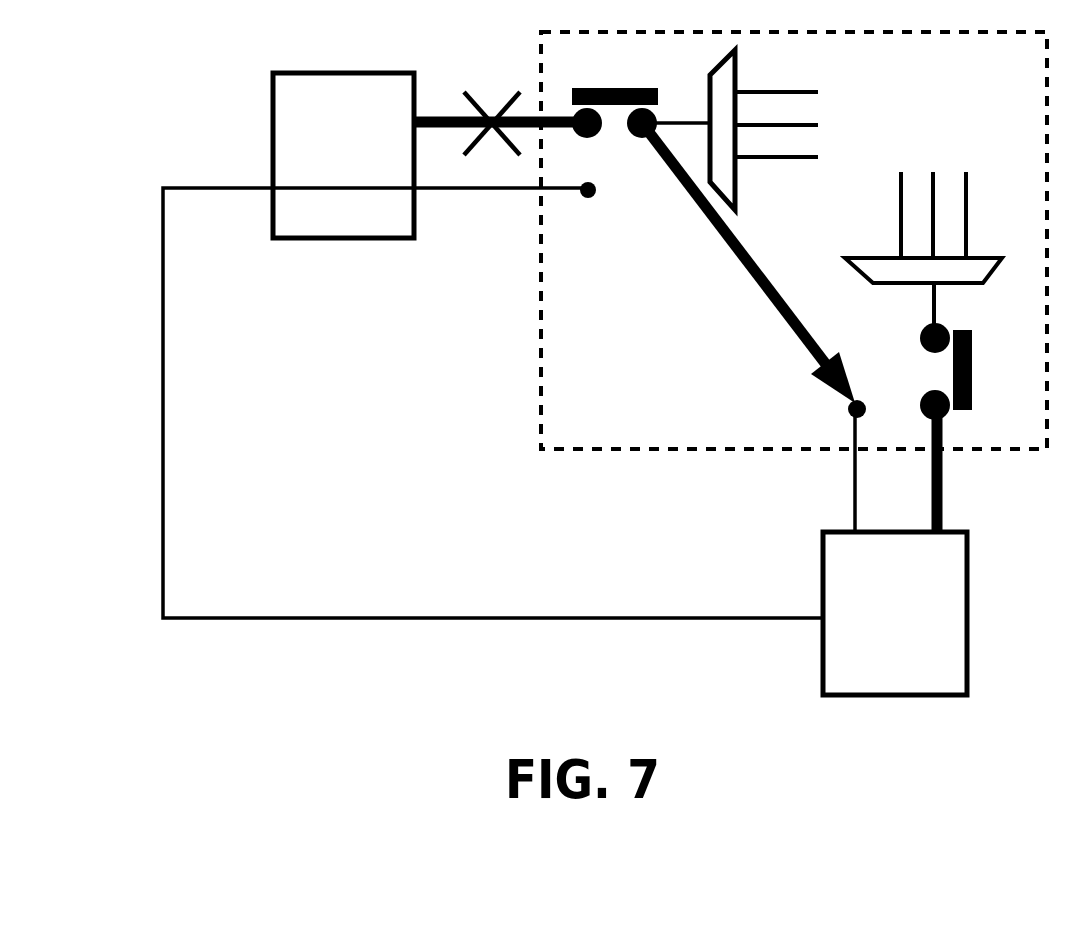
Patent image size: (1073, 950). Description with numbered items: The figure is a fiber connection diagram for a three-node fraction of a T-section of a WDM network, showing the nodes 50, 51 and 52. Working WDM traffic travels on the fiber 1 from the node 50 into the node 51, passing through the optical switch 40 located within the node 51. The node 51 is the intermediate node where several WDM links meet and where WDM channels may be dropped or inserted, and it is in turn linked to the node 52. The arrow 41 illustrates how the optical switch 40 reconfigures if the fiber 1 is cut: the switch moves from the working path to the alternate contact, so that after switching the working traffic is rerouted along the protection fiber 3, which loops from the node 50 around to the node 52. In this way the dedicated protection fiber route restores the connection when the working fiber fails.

The fiber 1 is at (500, 114).
The protection fiber 3 is at (493, 403).
The optical switch 40 is at (801, 226).
The arrow 41 is at (754, 270).
The node 50 is at (343, 155).
The node 51 is at (794, 240).
The node 52 is at (895, 613).